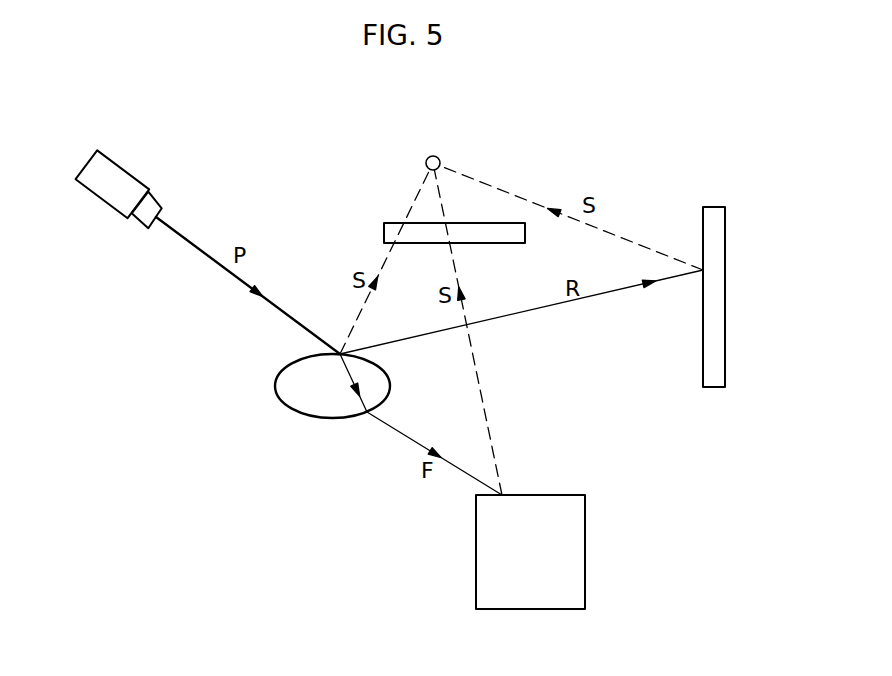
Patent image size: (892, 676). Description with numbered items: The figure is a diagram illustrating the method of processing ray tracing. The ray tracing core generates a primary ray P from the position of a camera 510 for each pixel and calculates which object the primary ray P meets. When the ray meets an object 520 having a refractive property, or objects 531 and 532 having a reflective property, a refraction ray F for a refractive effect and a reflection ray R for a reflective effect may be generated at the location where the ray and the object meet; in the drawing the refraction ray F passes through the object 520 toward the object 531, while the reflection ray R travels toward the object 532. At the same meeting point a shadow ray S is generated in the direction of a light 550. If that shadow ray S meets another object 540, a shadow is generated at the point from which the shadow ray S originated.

The camera 510 is at (100, 151).
The object 520 is at (274, 390).
The object 531 is at (475, 553).
The object 532 is at (718, 206).
The another object 540 is at (383, 233).
The light 550 is at (433, 156).